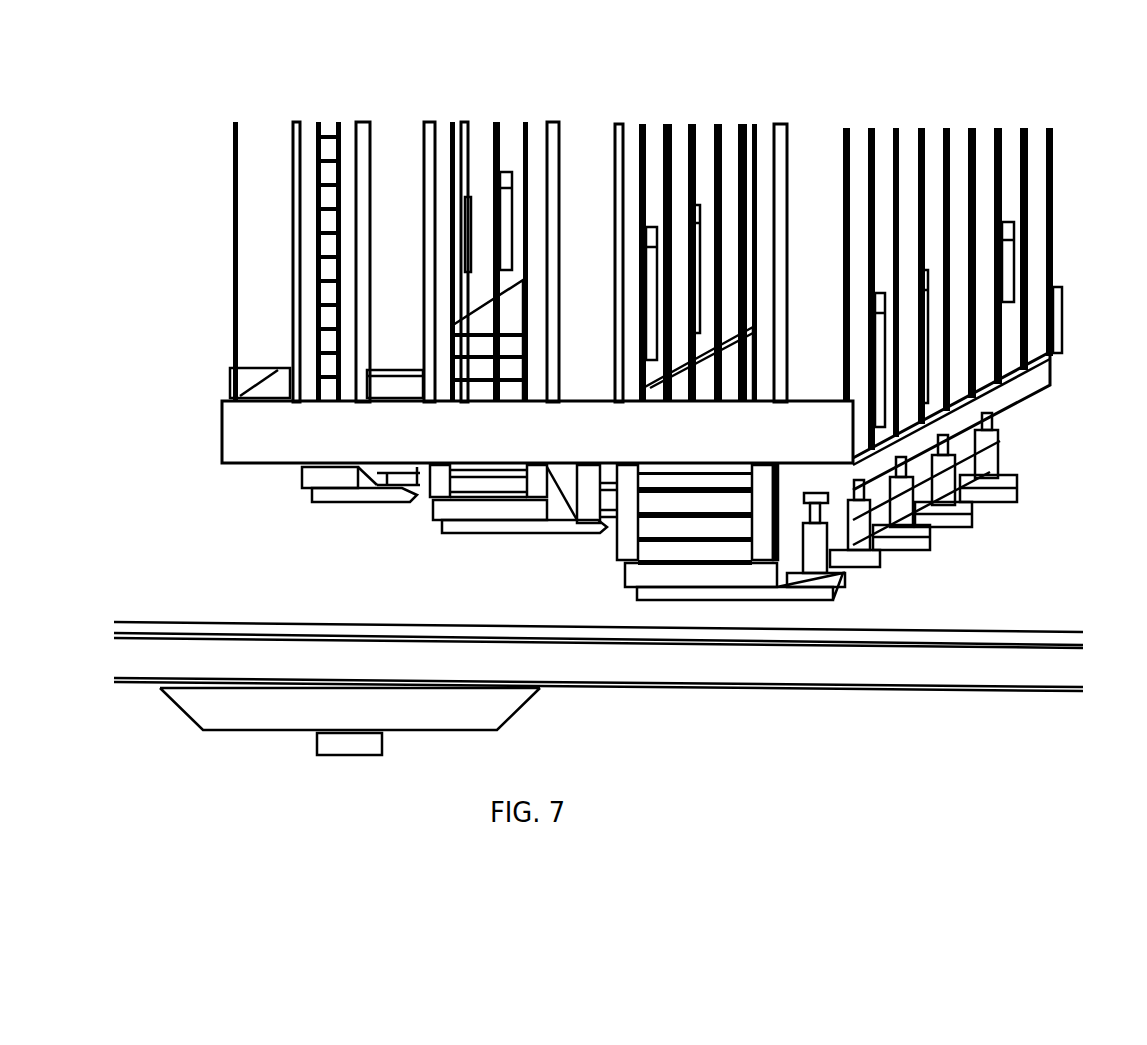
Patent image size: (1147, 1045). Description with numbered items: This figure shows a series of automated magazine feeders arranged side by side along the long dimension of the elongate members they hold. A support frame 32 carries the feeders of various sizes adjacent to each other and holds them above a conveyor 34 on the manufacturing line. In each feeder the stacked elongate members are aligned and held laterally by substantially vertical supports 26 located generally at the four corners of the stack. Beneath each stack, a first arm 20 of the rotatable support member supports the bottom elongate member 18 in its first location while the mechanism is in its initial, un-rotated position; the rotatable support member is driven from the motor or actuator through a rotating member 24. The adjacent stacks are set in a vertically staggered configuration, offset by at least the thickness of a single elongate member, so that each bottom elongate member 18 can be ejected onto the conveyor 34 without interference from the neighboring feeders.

The bottom elongate member 18 is at (303, 475).
The first arm 20 is at (367, 493).
The rotating member 24 is at (993, 450).
The substantially vertical supports 26 is at (350, 132).
The support frame 32 is at (270, 132).
The conveyor 34 is at (862, 655).